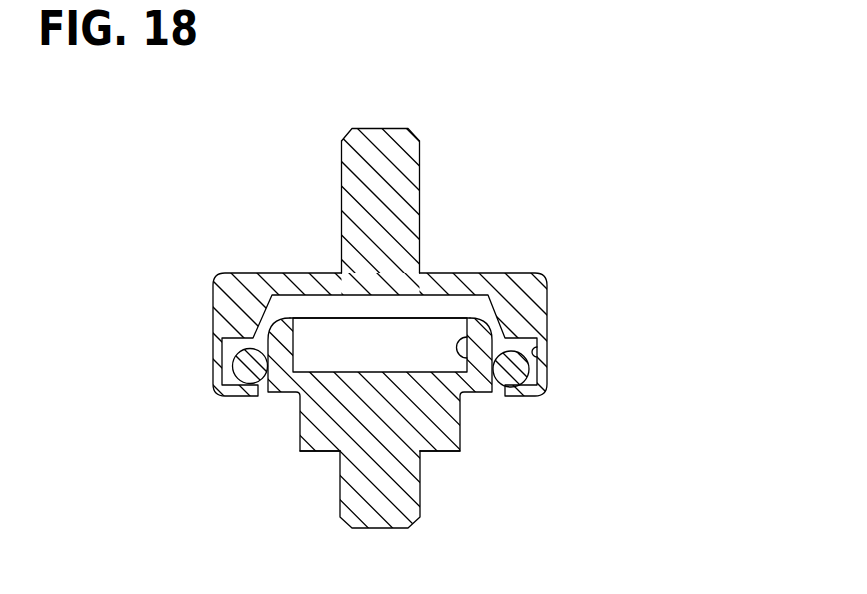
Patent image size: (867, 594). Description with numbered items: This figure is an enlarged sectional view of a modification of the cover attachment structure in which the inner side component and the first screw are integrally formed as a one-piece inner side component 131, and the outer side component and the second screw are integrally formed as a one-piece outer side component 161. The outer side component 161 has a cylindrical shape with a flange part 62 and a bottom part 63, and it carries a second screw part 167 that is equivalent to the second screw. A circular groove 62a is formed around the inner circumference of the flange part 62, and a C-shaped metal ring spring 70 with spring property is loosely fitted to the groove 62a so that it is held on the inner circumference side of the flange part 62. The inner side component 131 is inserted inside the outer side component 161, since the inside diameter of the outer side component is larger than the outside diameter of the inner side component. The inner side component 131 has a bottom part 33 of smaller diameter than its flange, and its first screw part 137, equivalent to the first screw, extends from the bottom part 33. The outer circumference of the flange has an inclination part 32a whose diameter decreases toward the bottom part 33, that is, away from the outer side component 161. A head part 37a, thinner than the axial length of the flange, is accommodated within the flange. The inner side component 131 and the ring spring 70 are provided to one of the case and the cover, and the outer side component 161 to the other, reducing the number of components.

The outer side component 161 is at (517, 265).
The flange part 62 is at (548, 304).
The groove 62a is at (533, 353).
The bottom part 63 is at (440, 273).
The second screw part 167 is at (393, 128).
The ring spring 70 is at (521, 378).
The inclination part 32a is at (260, 390).
The head part 37a is at (493, 390).
The inner side component 131 is at (466, 428).
The bottom part 33 is at (318, 455).
The first screw part 137 is at (397, 529).